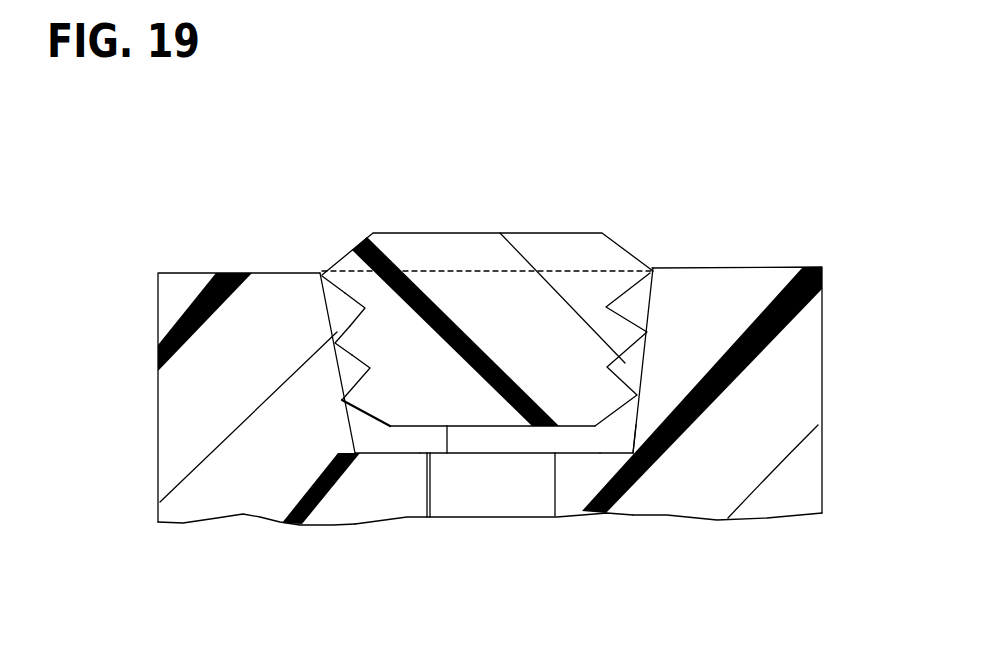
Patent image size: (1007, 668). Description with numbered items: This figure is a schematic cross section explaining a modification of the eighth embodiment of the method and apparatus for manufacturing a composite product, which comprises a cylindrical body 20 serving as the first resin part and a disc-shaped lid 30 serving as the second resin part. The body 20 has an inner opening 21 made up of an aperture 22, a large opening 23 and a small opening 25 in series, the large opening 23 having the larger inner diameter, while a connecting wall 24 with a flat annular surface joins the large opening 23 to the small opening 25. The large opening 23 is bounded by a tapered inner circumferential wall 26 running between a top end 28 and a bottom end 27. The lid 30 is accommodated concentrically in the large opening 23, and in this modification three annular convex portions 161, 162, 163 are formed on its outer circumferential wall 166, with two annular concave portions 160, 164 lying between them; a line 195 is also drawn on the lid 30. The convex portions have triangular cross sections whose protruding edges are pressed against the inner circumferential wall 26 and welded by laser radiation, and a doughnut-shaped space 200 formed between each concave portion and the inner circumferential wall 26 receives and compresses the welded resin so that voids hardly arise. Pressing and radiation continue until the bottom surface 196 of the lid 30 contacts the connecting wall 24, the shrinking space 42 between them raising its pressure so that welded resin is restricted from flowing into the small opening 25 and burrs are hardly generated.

The body 20 is at (774, 262).
The lid 30 is at (612, 224).
The outer circumferential wall 166 is at (357, 258).
The screw head edge line 195 is at (493, 232).
The aperture 22 is at (528, 275).
The top end 28 is at (653, 268).
The doughnut-shaped space 200 is at (640, 312).
The annular convex portion 163 is at (337, 280).
The annular concave portion 164 is at (362, 308).
The annular convex portion 161 is at (337, 343).
The annular concave portion 160 is at (370, 368).
The annular convex portion 162 is at (347, 406).
The connecting wall 24 is at (400, 455).
The space 42 is at (410, 438).
The bottom surface 196 is at (447, 453).
The large opening 23 is at (517, 443).
The small opening 25 is at (543, 493).
The inner opening 21 is at (567, 583).
The bottom end 27 is at (627, 452).
The inner circumferential wall 26 is at (629, 428).